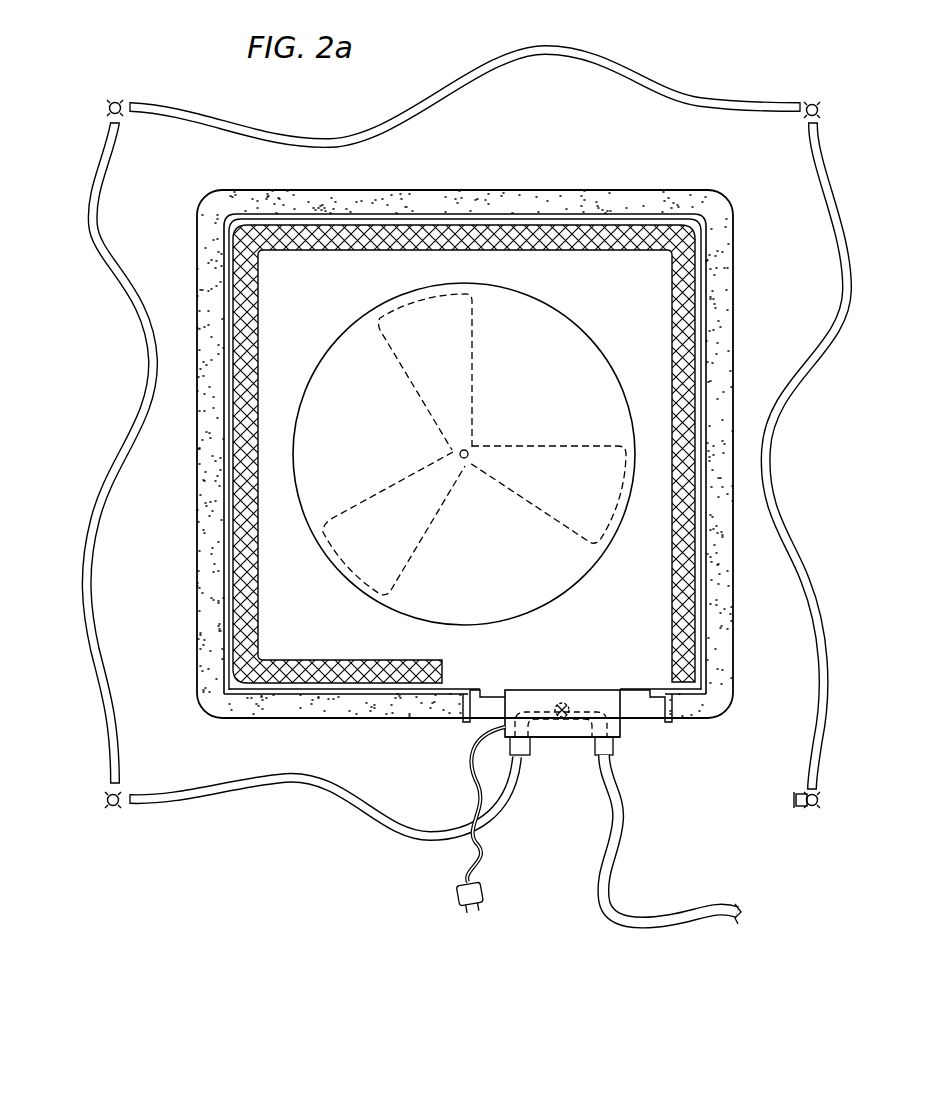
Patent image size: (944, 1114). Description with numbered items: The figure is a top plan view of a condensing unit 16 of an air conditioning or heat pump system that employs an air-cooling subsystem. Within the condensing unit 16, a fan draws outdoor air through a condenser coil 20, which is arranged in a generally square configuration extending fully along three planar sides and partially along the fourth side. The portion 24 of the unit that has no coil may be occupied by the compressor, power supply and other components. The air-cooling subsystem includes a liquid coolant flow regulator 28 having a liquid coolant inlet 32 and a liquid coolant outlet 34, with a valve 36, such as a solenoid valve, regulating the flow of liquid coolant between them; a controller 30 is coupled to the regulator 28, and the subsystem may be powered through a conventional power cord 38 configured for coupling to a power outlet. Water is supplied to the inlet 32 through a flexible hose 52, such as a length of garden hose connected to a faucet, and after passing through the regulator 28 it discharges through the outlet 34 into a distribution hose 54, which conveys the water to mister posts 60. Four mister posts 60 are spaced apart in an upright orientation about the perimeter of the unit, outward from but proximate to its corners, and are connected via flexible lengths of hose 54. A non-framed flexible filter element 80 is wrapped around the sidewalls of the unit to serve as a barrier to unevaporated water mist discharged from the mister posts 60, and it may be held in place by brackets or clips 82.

The condensing unit 16 is at (594, 218).
The condenser coil 20 is at (313, 660).
The portion of the condensing unit without coil 24 is at (632, 694).
The liquid coolant flow regulator 28 is at (545, 704).
The controller 30 is at (562, 740).
The liquid coolant inlet 32 is at (614, 745).
The liquid coolant outlet 34 is at (533, 757).
The valve 36 is at (568, 704).
The power cord 38 is at (462, 876).
The flexible hose 52 is at (624, 838).
The distribution hose 54 is at (545, 46).
The mister post 60 is at (111, 102).
The non-framed flexible filter element 80 is at (734, 285).
The brackets or clips 82 is at (466, 726).